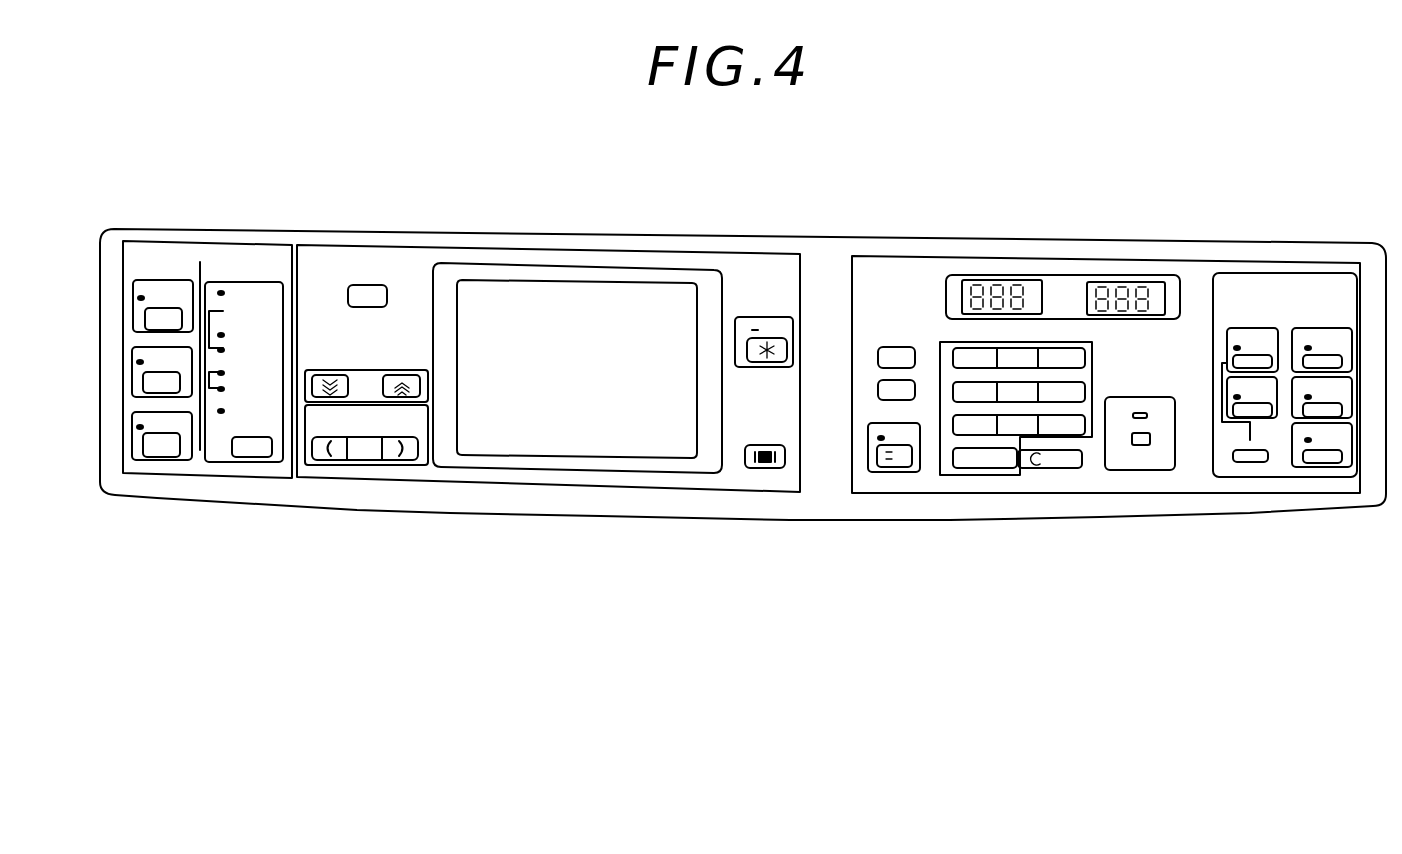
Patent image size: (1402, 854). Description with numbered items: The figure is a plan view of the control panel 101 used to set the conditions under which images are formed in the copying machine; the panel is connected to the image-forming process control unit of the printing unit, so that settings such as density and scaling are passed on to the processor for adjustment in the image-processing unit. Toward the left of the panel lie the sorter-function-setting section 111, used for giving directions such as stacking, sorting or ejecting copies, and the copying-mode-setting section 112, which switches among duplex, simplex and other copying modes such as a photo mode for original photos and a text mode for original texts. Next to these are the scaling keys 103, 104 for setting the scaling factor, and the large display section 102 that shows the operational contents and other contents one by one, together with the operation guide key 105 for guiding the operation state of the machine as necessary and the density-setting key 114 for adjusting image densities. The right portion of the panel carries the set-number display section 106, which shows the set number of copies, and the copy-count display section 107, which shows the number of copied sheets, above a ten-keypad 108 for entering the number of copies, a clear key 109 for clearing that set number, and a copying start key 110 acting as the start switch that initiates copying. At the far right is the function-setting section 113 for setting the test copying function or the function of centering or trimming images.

The control panel 101 is at (630, 230).
The display section 102 is at (498, 290).
The scaling key 103 is at (407, 376).
The scaling key 104 is at (324, 376).
The operation guide key 105 is at (748, 340).
The set-number display section 106 is at (958, 283).
The copy-count display section 107 is at (1080, 283).
The ten-keypad 108 is at (983, 478).
The clear key 109 is at (1055, 467).
The copying start key 110 is at (1153, 463).
The sorter-function-setting section 111 is at (172, 262).
The copying-mode-setting section 112 is at (265, 266).
The function-setting section 113 is at (1272, 272).
The density-setting key 114 is at (767, 468).